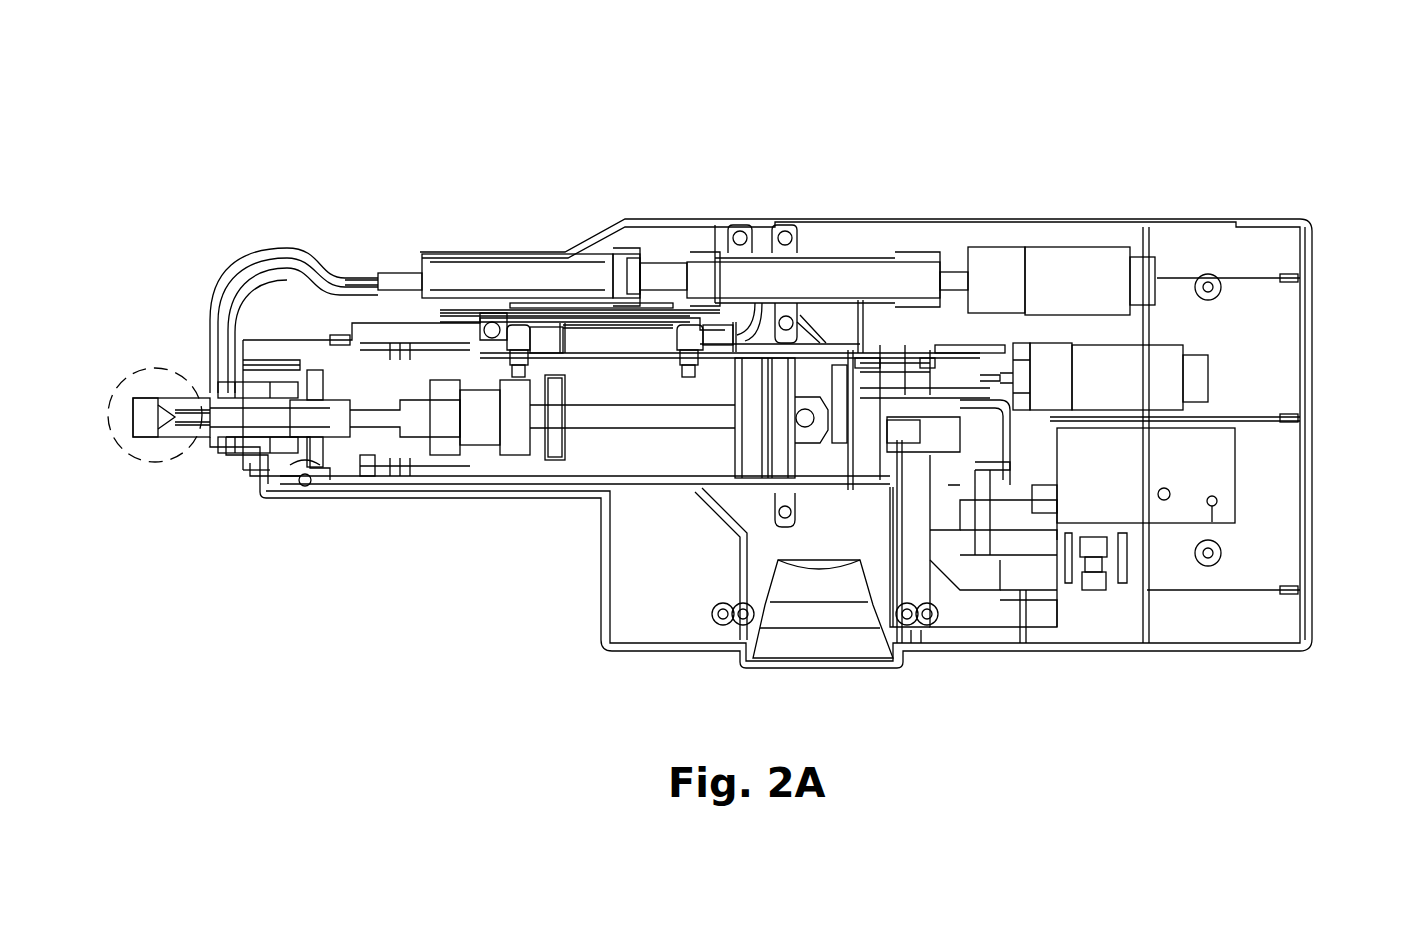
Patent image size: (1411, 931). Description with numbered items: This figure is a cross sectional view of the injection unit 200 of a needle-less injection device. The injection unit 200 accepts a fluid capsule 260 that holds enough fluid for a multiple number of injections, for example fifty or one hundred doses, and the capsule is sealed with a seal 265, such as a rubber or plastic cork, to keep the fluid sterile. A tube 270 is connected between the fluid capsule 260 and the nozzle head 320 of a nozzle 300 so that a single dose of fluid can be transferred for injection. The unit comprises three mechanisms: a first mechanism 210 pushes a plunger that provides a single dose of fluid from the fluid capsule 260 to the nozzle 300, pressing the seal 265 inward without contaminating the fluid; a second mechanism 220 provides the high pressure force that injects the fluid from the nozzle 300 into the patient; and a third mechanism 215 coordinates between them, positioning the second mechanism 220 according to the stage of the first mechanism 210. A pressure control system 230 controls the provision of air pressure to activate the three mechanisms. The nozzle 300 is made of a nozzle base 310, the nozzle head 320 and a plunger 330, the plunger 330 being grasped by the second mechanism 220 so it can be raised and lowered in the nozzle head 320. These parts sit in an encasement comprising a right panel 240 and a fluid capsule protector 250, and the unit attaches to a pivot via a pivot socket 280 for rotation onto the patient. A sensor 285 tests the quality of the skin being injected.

The injection unit 200 is at (290, 132).
The first mechanism 210 is at (1068, 283).
The third mechanism 215 is at (1150, 380).
The second mechanism 220 is at (748, 455).
The pressure control system 230 is at (1205, 457).
The right panel 240 is at (1265, 628).
The fluid capsule protector 250 is at (658, 218).
The fluid capsule 260 is at (465, 278).
The seal 265 is at (625, 250).
The tube 270 is at (286, 248).
The pivot socket 280 is at (833, 645).
The sensor 285 is at (257, 455).
The nozzle 300 is at (160, 372).
The nozzle base 310 is at (150, 440).
The nozzle head 320 is at (172, 440).
The plunger 330 is at (190, 435).